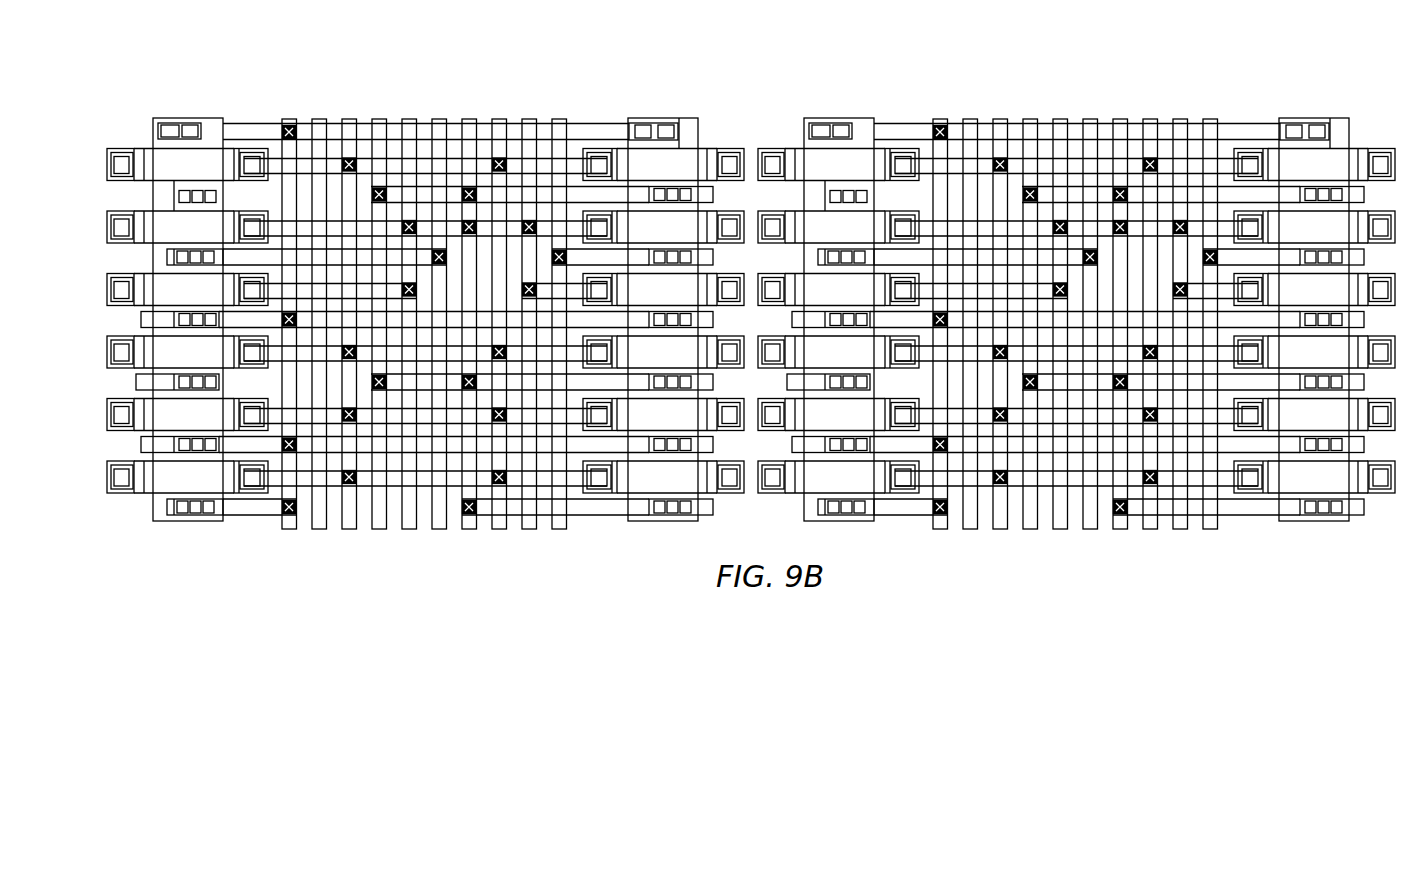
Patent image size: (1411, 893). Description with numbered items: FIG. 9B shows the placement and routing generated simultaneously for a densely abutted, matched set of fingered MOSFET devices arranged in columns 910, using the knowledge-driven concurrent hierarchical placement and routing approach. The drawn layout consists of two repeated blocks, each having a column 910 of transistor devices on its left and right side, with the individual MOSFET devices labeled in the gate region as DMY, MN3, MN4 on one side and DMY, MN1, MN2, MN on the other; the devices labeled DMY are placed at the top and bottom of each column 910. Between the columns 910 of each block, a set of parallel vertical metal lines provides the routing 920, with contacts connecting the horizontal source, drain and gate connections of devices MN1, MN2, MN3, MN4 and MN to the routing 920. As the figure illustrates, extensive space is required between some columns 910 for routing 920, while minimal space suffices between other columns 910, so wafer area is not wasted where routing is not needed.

The columns 910 is at (732, 305).
The routing 920 is at (750, 278).
The dummy transistor DMY is at (751, 321).
The transistor MN1 is at (989, 258).
The transistor MN2 is at (989, 352).
The transistor MN3 is at (513, 258).
The transistor MN4 is at (513, 383).
The transistor MN is at (989, 415).